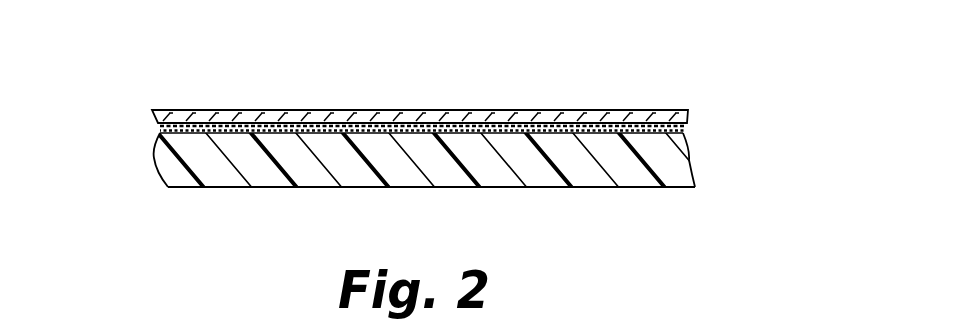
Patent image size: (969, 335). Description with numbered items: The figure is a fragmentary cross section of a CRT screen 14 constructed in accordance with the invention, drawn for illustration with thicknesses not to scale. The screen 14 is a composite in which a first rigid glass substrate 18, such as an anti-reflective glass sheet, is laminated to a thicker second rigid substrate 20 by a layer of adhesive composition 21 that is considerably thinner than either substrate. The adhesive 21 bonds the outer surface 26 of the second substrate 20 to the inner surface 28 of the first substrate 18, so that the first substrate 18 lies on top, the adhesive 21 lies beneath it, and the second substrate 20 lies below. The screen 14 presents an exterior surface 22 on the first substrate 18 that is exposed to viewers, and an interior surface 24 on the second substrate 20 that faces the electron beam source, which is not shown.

The screen 14 is at (650, 75).
The first rigid glass substrate 18 is at (315, 110).
The second rigid substrate 20 is at (258, 172).
The adhesive composition 21 is at (160, 130).
The exterior surface 22 is at (412, 110).
The interior surface 24 is at (412, 187).
The outer surface of the second substrate 26 is at (594, 125).
The inner surface of the first substrate 28 is at (489, 130).